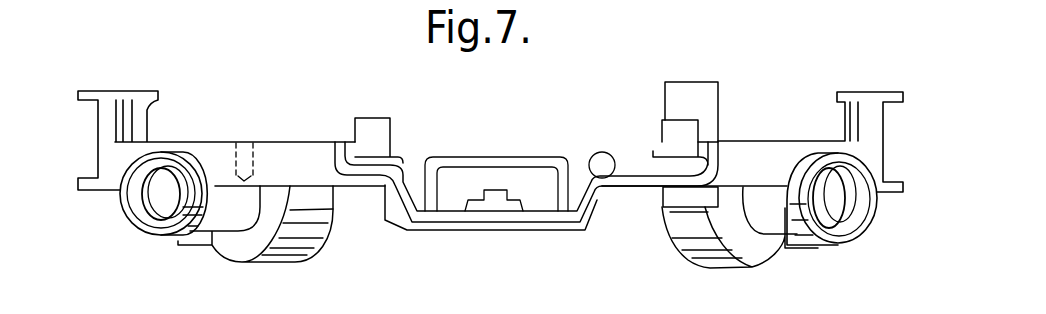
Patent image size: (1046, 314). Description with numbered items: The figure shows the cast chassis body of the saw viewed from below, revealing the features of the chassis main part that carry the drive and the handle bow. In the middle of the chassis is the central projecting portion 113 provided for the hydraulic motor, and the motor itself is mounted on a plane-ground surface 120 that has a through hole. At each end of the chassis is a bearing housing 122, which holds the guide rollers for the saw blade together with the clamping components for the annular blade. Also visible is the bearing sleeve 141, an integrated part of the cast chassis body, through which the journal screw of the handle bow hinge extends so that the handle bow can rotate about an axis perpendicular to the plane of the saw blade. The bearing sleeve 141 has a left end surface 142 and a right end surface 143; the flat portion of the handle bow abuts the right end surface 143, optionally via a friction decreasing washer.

The central projecting portion 113 is at (507, 213).
The plane-ground surface 120 is at (465, 232).
The bearing housing 122 is at (145, 223).
The bearing sleeve 141 is at (715, 113).
The left end surface 142 is at (668, 226).
The right end surface 143 is at (680, 82).